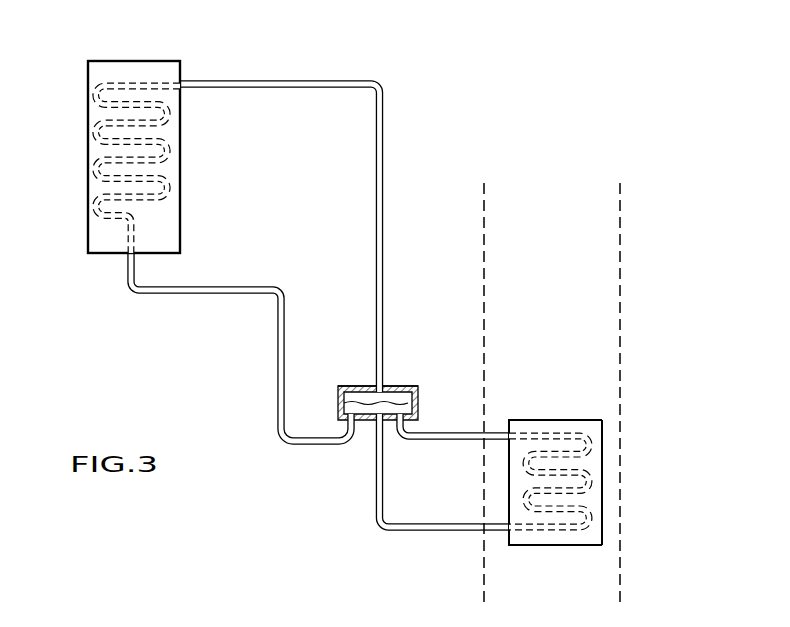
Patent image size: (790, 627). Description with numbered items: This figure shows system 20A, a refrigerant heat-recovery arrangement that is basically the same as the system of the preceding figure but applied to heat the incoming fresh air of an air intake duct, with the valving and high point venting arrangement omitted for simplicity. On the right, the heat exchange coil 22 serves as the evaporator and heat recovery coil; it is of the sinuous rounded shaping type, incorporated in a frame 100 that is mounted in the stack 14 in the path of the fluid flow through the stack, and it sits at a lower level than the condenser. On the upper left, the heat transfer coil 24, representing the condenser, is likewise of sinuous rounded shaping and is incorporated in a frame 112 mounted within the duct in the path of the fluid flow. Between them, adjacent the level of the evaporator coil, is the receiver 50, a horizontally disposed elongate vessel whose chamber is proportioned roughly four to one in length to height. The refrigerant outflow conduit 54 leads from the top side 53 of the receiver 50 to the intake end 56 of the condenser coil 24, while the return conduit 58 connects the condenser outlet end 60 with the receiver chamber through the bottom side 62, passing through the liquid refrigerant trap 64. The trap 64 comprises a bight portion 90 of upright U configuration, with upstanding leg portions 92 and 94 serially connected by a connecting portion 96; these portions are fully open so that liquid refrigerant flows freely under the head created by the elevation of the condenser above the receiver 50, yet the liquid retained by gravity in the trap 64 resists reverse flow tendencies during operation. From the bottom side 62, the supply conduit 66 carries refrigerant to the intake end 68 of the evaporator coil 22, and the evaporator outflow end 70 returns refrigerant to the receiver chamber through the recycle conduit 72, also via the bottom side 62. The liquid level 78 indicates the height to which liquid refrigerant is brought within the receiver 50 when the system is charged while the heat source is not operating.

The system 20A is at (430, 150).
The frame 112 is at (186, 57).
The heat transfer coil 24 is at (80, 182).
The intake end 56 is at (184, 84).
The refrigerant outflow conduit 54 is at (385, 268).
The outlet end 60 is at (128, 255).
The return conduit 58 is at (256, 287).
The upstanding leg portion 92 is at (287, 330).
The liquid refrigerant trap 64 is at (258, 355).
The bight portion 90 is at (288, 446).
The connecting portion 96 is at (312, 447).
The upstanding leg portion 94 is at (334, 427).
The receiver 50 is at (425, 382).
The top side 53 is at (363, 386).
The liquid level 78 is at (389, 400).
The bottom side 62 is at (371, 423).
The supply conduit 66 is at (414, 532).
The intake end 68 is at (508, 536).
The recycle conduit 72 is at (439, 433).
The frame 100 is at (614, 441).
The outflow end 70 is at (512, 435).
The heat exchange coil 22 is at (610, 524).
The stack 14 is at (628, 319).